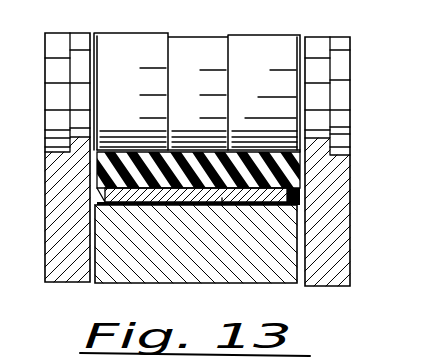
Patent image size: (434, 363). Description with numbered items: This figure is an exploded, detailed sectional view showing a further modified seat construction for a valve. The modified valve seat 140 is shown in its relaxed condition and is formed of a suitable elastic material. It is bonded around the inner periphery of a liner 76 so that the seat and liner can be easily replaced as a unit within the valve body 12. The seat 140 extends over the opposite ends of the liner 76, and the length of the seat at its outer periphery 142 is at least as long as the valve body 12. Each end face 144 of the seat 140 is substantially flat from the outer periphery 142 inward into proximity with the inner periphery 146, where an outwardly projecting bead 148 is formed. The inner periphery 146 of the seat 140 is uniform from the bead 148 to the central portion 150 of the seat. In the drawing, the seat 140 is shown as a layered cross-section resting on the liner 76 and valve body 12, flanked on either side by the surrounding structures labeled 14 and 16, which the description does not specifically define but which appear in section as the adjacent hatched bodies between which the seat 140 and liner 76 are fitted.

The valve body 12 is at (135, 258).
The left wall 14 is at (64, 243).
The right wall 16 is at (325, 257).
The liner 76 is at (222, 198).
The valve seat 140 is at (147, 150).
The outer periphery 142 is at (96, 201).
The end face 144 is at (97, 174).
The inner periphery 146 is at (100, 138).
The bead 148 is at (72, 156).
The central portion 150 is at (180, 152).